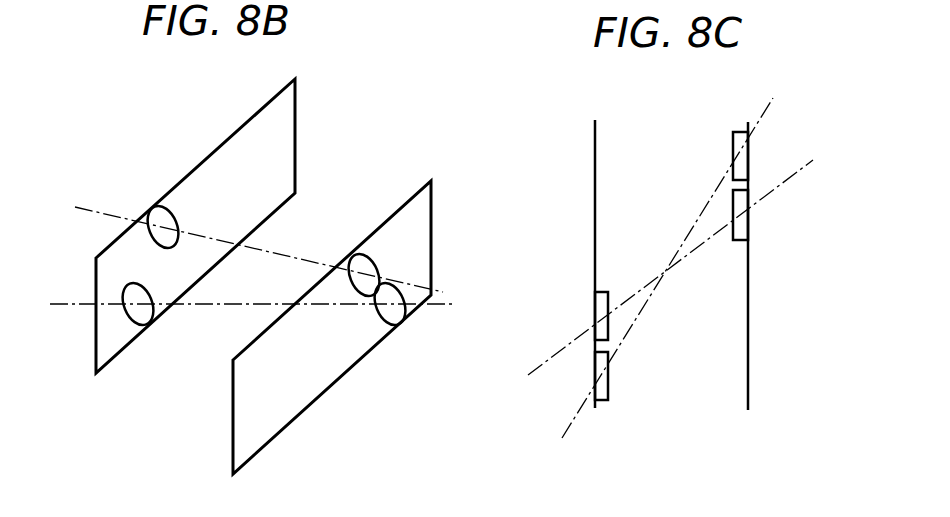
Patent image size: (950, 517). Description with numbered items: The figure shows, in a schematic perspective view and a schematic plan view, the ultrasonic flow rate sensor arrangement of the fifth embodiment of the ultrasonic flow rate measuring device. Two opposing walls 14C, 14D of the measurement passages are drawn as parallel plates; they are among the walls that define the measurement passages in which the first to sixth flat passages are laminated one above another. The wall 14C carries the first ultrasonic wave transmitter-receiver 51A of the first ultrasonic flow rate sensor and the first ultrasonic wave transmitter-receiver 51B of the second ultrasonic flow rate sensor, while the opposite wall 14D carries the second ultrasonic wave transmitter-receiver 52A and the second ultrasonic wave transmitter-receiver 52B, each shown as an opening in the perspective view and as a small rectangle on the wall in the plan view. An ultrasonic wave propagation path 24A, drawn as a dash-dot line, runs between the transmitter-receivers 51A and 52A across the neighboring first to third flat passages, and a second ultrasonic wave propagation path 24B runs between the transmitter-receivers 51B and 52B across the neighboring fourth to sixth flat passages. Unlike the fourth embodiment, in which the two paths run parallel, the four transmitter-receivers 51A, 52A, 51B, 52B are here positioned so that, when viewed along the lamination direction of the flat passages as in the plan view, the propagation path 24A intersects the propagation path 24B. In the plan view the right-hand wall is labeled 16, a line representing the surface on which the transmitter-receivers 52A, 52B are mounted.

In FIG. 8B, the wall 14C is at (235, 177).
In FIG. 8C, the wall 14C is at (595, 167).
In FIG. 8B, the wall 14D is at (330, 362).
In FIG. 8C, the plane / surface 16 is at (748, 355).
In FIG. 8B, the ultrasonic wave propagation path 24A is at (291, 257).
In FIG. 8C, the ultrasonic wave propagation path 24A is at (632, 291).
In FIG. 8B, the ultrasonic wave propagation path 24B is at (205, 305).
In FIG. 8C, the ultrasonic wave propagation path 24B is at (637, 318).
In FIG. 8B, the first ultrasonic wave transmitter-receiver 51A is at (173, 217).
In FIG. 8C, the first ultrasonic wave transmitter-receiver 51A is at (600, 305).
In FIG. 8B, the first ultrasonic wave transmitter-receiver 51B is at (125, 318).
In FIG. 8C, the first ultrasonic wave transmitter-receiver 51B is at (603, 388).
In FIG. 8B, the second ultrasonic wave transmitter-receiver 52A is at (387, 260).
In FIG. 8C, the second ultrasonic wave transmitter-receiver 52A is at (743, 225).
In FIG. 8B, the second ultrasonic wave transmitter-receiver 52B is at (383, 313).
In FIG. 8C, the second ultrasonic wave transmitter-receiver 52B is at (743, 160).